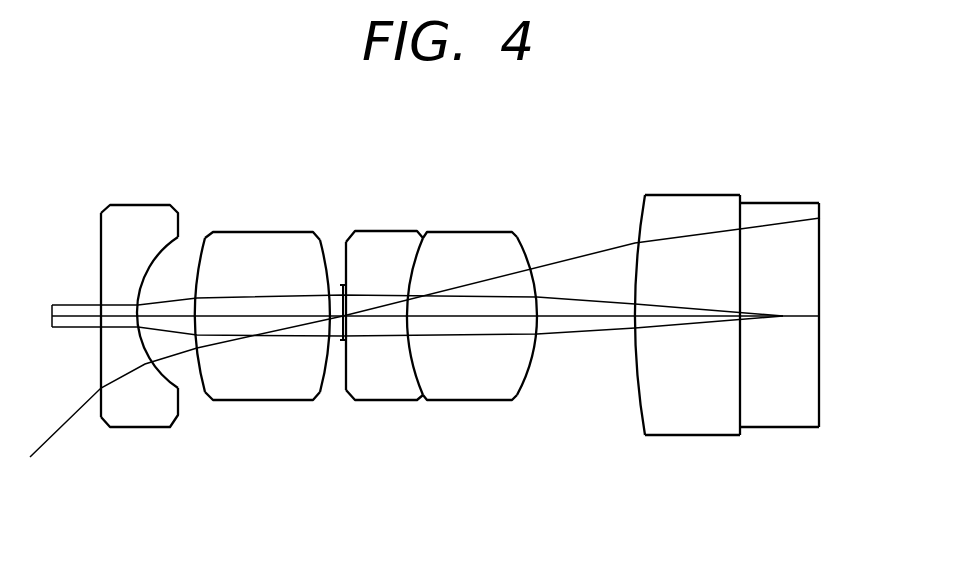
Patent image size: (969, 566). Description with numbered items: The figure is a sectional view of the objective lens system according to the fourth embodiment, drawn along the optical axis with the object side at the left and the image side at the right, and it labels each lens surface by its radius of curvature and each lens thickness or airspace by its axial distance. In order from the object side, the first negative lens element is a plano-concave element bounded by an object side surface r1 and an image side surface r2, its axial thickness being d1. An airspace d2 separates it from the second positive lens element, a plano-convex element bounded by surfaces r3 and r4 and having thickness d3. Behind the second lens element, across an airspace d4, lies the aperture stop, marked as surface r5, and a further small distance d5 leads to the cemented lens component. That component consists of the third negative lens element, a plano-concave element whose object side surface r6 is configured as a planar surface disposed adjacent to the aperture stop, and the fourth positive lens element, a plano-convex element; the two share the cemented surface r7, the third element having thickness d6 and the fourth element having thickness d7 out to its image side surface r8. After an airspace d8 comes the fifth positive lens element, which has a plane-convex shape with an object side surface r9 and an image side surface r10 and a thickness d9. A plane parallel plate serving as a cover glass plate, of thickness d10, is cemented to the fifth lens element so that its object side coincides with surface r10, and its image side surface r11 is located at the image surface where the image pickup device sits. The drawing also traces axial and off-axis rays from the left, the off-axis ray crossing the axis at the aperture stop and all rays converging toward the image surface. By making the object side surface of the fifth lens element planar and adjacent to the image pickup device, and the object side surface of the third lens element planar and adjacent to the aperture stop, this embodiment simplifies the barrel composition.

The radius of curvature of object side surface of first lens element r1 is at (103, 383).
The radius of curvature of image side surface of first lens element r2 is at (178, 372).
The radius of curvature of object side surface of second lens element r3 is at (203, 393).
The radius of curvature of image side surface of second lens element r4 is at (333, 348).
The aperture stop surface r5 is at (343, 342).
The radius of curvature of object side surface of third lens element r6 is at (350, 370).
The radius of curvature of cemented surface r7 is at (415, 364).
The radius of curvature of image side surface of fourth lens element r8 is at (533, 360).
The radius of curvature of object side surface of fifth lens element r9 is at (637, 380).
The radius of curvature of image side surface of fifth lens element r10 is at (742, 378).
The radius of curvature of image side surface of plane parallel plate r11 is at (820, 377).
The thickness of first lens element d1 is at (113, 313).
The airspace between first and second lens elements d2 is at (172, 316).
The thickness of second lens element d3 is at (257, 316).
The airspace between second lens element and aperture stop d4 is at (340, 312).
The airspace between aperture stop and third lens element d5 is at (360, 314).
The thickness of third lens element d6 is at (391, 314).
The thickness of fourth lens element d7 is at (478, 316).
The airspace between fourth and fifth lens elements d8 is at (587, 314).
The thickness of fifth lens element d9 is at (685, 316).
The thickness of plane parallel plate d10 is at (780, 316).